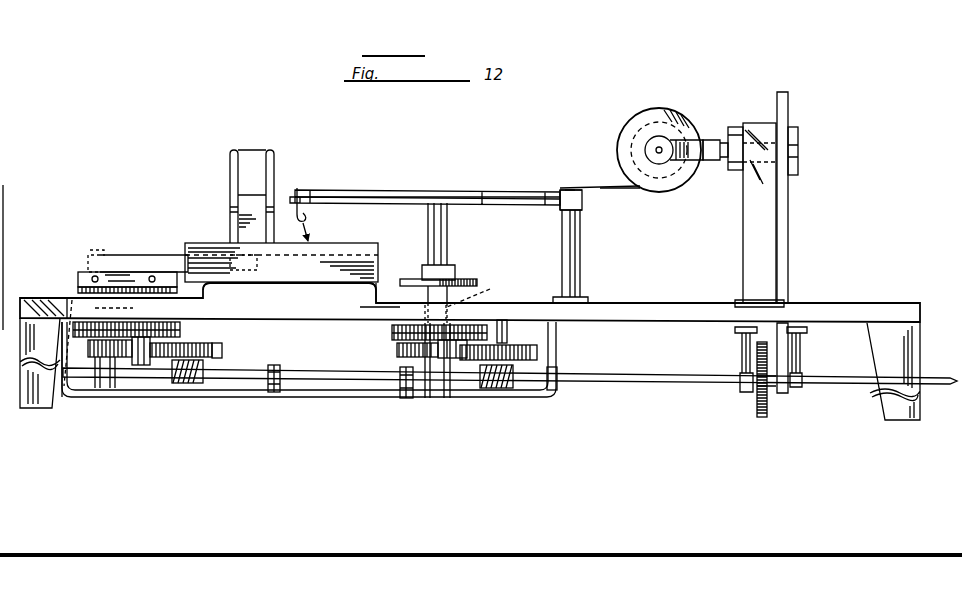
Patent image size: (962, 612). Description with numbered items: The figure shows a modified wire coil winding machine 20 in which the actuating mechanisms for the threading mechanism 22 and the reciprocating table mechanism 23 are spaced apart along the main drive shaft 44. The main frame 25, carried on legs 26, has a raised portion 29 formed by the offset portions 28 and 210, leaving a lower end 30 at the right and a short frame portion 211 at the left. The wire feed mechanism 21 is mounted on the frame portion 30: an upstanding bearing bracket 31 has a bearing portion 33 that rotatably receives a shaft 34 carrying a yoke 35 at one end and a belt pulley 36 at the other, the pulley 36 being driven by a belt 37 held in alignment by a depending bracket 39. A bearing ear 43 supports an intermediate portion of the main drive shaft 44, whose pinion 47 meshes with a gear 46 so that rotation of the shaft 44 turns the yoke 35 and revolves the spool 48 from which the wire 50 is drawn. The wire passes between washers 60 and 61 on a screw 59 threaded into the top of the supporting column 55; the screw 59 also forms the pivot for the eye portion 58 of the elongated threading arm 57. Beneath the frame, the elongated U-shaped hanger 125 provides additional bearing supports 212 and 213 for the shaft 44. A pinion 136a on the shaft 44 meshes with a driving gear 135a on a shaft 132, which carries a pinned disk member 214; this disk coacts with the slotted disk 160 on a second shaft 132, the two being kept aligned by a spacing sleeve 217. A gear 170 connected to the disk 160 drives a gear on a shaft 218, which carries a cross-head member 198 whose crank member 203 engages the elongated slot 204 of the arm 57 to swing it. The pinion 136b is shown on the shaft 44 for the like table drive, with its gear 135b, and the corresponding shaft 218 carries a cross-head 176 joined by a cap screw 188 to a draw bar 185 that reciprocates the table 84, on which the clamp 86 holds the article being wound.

The wire coil winding machine 20 is at (685, 241).
The wire feed mechanism 21 is at (723, 139).
The threading mechanism 22 is at (440, 172).
The reciprocating table mechanism 23 is at (213, 242).
The main frame 25 is at (688, 302).
The legs 26 is at (922, 343).
The offset portion 28 is at (362, 308).
The raised frame portion 29 is at (380, 283).
The frame end portion 30 is at (862, 303).
The bearing bracket 31 is at (745, 217).
The bearing portion 33 is at (760, 128).
The shaft 34 is at (750, 168).
The yoke 35 is at (680, 140).
The belt pulley 36 is at (793, 128).
The belt 37 is at (789, 217).
The depending bracket 39 is at (804, 356).
The bearing ear 43 is at (747, 390).
The main drive shaft 44 is at (681, 369).
The gear 46 is at (770, 410).
The pinion 47 is at (767, 386).
The spool 48 is at (656, 108).
The wire 50 is at (613, 189).
The supporting column 55 is at (580, 252).
The elongated arm 57 is at (533, 176).
The eye portion 58 is at (584, 212).
The screw 59 is at (565, 189).
The washer 60 is at (563, 189).
The washer 61 is at (583, 196).
The reciprocating table 84 is at (378, 241).
The clamp 86 is at (257, 157).
The U-shaped hanger 125 is at (559, 338).
The shaft 132 is at (190, 330).
The driving gear 135a is at (558, 368).
The collar 135b is at (221, 362).
The pinion 136a is at (510, 390).
The worm 136b is at (205, 390).
The disk 160 is at (88, 347).
The gear 170 is at (394, 333).
The cross-head 176 is at (80, 276).
The draw bar 185 is at (165, 243).
The cap screw 188 is at (110, 238).
The cross-head member 198 is at (510, 268).
The crank member 203 is at (449, 233).
The elongated slot 204 is at (481, 195).
The offset portion 210 is at (207, 297).
The frame portion 211 is at (45, 298).
The bearing support 212 is at (309, 350).
The bearing support 213 is at (400, 390).
The disk member 214 is at (506, 332).
The spacing sleeve 217 is at (110, 391).
The shaft 218 is at (291, 333).